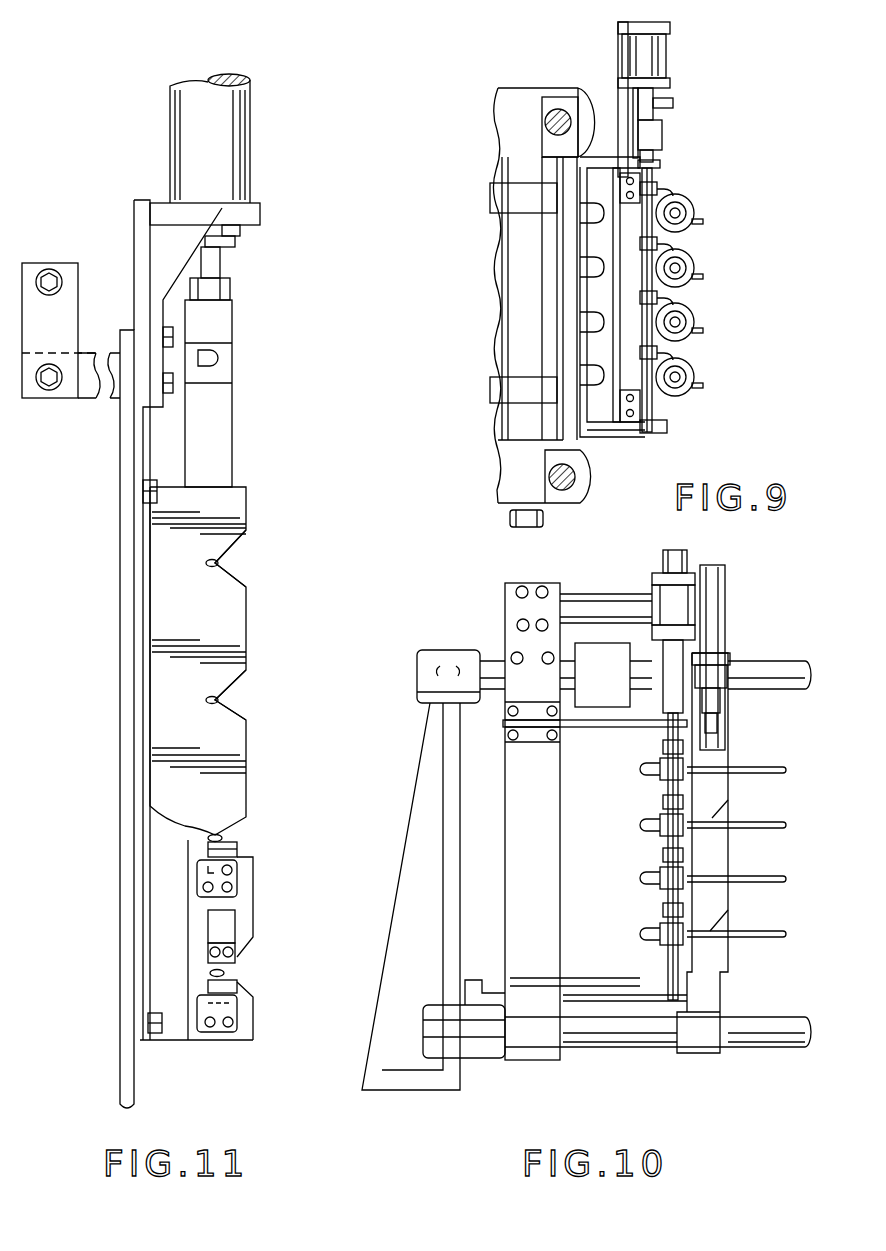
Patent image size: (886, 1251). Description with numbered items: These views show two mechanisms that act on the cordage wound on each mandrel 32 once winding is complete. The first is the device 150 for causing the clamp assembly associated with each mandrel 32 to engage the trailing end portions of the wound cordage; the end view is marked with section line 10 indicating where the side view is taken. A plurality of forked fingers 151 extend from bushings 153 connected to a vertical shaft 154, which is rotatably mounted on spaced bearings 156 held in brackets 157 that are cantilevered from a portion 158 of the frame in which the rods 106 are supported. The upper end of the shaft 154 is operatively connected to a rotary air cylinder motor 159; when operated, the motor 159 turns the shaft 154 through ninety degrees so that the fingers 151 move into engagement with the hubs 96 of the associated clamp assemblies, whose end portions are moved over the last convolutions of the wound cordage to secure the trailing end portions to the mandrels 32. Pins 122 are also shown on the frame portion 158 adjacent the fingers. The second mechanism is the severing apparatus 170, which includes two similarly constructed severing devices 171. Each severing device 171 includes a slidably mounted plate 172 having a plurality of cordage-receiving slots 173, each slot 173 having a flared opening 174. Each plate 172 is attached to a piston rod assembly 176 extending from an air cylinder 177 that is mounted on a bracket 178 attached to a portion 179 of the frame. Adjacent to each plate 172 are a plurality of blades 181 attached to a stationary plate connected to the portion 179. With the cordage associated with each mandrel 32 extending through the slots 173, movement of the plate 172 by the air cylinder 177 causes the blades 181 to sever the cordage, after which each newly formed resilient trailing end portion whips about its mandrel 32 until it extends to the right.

In FIG. 9, the section line 10 is at (801, 358).
In FIG. 9, the mandrel 32 is at (692, 378).
In FIG. 10, the mandrel 32 is at (775, 767).
In FIG. 9, the hub 96 is at (682, 364).
In FIG. 9, the rod 106 is at (566, 113).
In FIG. 10, the rod 106 is at (800, 662).
In FIG. 9, the pins 122 is at (583, 268).
In FIG. 9, the device for causing clamp assemblies to engage trailing end portions 150 is at (771, 148).
In FIG. 9, the forked finger 151 is at (668, 196).
In FIG. 10, the forked finger 151 is at (662, 754).
In FIG. 9, the bushing 153 is at (658, 297).
In FIG. 9, the vertical shaft 154 is at (655, 406).
In FIG. 10, the vertical shaft 154 is at (670, 958).
In FIG. 9, the bearing 156 is at (660, 164).
In FIG. 9, the bracket 157 is at (612, 150).
In FIG. 10, the bracket 157 is at (602, 724).
In FIG. 9, the portion of the frame 158 is at (583, 214).
In FIG. 9, the rotary air cylinder motor 159 is at (670, 58).
In FIG. 10, the rotary air cylinder motor 159 is at (700, 596).
In FIG. 10, the severing apparatus 170 is at (727, 850).
In FIG. 11, the severing apparatus 170 is at (293, 243).
In FIG. 11, the severing device 171 is at (248, 512).
In FIG. 11, the slidably mounted plate 172 is at (218, 562).
In FIG. 11, the cordage-receiving slot 173 is at (208, 563).
In FIG. 10, the flared opening 174 is at (728, 800).
In FIG. 11, the flared opening 174 is at (236, 694).
In FIG. 10, the piston rod assembly 176 is at (744, 688).
In FIG. 11, the piston rod assembly 176 is at (222, 268).
In FIG. 10, the air cylinder 177 is at (727, 619).
In FIG. 11, the air cylinder 177 is at (249, 129).
In FIG. 11, the bracket 178 is at (163, 243).
In FIG. 11, the portion of the frame 179 is at (128, 618).
In FIG. 11, the blade 181 is at (236, 845).